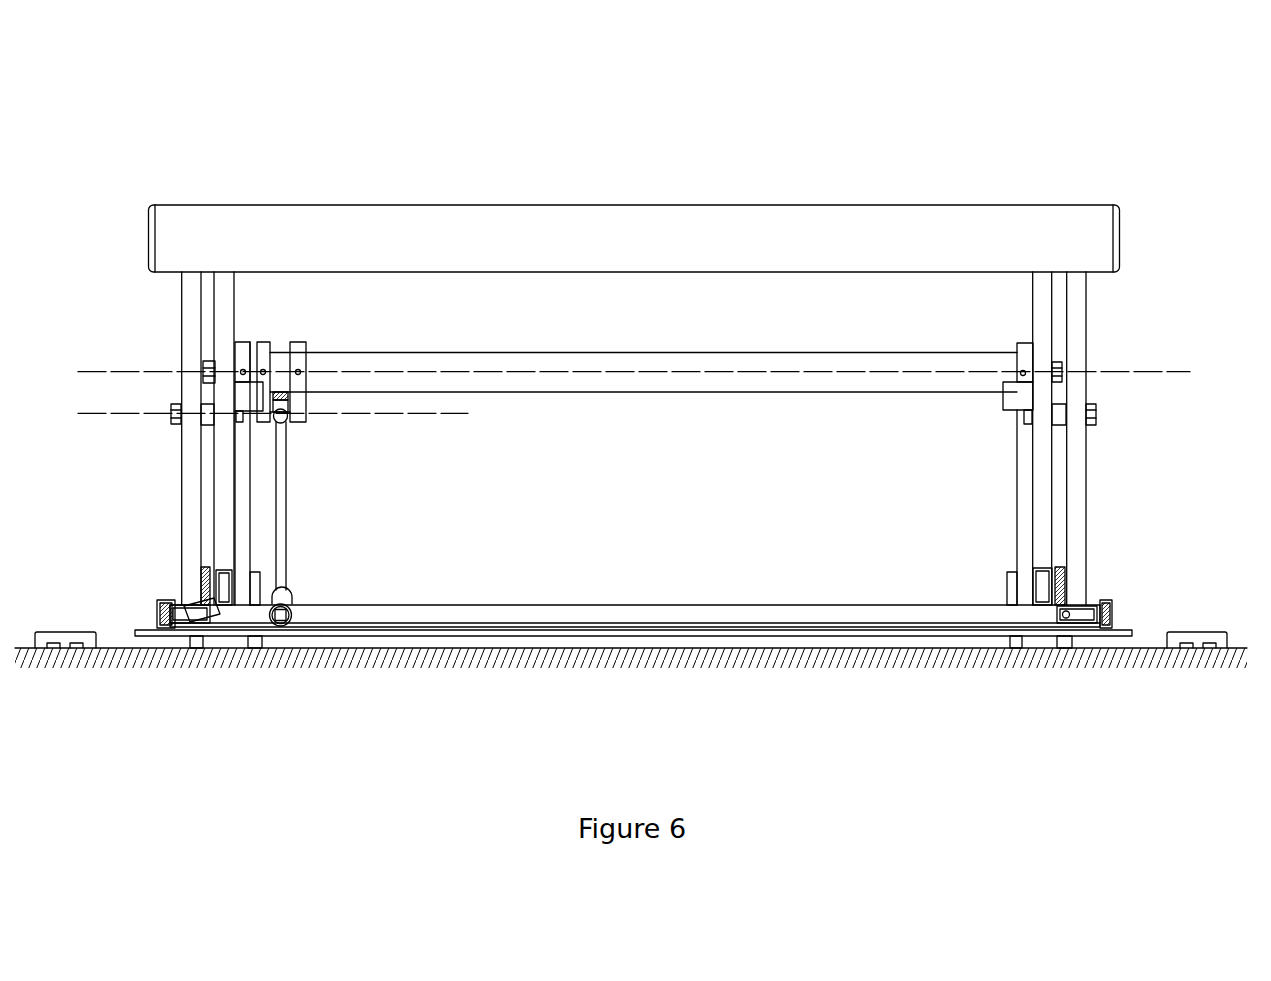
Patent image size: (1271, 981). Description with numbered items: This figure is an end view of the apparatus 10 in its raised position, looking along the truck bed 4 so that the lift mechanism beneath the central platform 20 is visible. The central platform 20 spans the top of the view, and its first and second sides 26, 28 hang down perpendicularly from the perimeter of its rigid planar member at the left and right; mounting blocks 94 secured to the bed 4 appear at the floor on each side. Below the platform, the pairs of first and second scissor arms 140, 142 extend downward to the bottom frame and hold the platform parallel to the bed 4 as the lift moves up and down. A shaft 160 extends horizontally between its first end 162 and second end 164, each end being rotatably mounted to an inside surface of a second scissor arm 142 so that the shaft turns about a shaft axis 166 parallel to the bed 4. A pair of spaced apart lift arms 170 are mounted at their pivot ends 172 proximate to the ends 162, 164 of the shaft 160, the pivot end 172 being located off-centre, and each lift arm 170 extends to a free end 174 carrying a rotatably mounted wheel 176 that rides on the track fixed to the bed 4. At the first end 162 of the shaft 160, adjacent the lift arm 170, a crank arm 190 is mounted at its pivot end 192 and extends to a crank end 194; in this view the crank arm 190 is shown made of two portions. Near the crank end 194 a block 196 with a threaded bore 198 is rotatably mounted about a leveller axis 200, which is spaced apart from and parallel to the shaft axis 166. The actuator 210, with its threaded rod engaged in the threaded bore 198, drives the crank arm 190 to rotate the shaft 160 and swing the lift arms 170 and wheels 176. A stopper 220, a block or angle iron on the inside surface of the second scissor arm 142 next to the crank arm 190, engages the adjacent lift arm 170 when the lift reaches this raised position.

The apparatus 10 is at (834, 56).
The central platform 20 is at (636, 205).
The first side 26 is at (148, 240).
The second side 28 is at (1120, 240).
The bed 4 is at (128, 648).
The mounting blocks 94 is at (45, 633).
The first scissor arm 140 is at (212, 518).
The second scissor arm 142 is at (181, 480).
The shaft 160 is at (433, 352).
The first end 162 is at (235, 355).
The second end 164 is at (1033, 353).
The shaft axis 166 is at (1158, 372).
The lift arm 170 is at (236, 535).
The pivot end 172 is at (240, 342).
The free end 174 is at (250, 627).
The wheel 176 is at (254, 598).
The crank arm 190 is at (262, 342).
The pivot end 192 is at (305, 342).
The crank end 194 is at (305, 425).
The block 196 is at (290, 342).
The threaded bore 198 is at (390, 357).
The leveller axis 200 is at (108, 415).
The actuator 210 is at (290, 540).
The stopper 220 is at (235, 397).